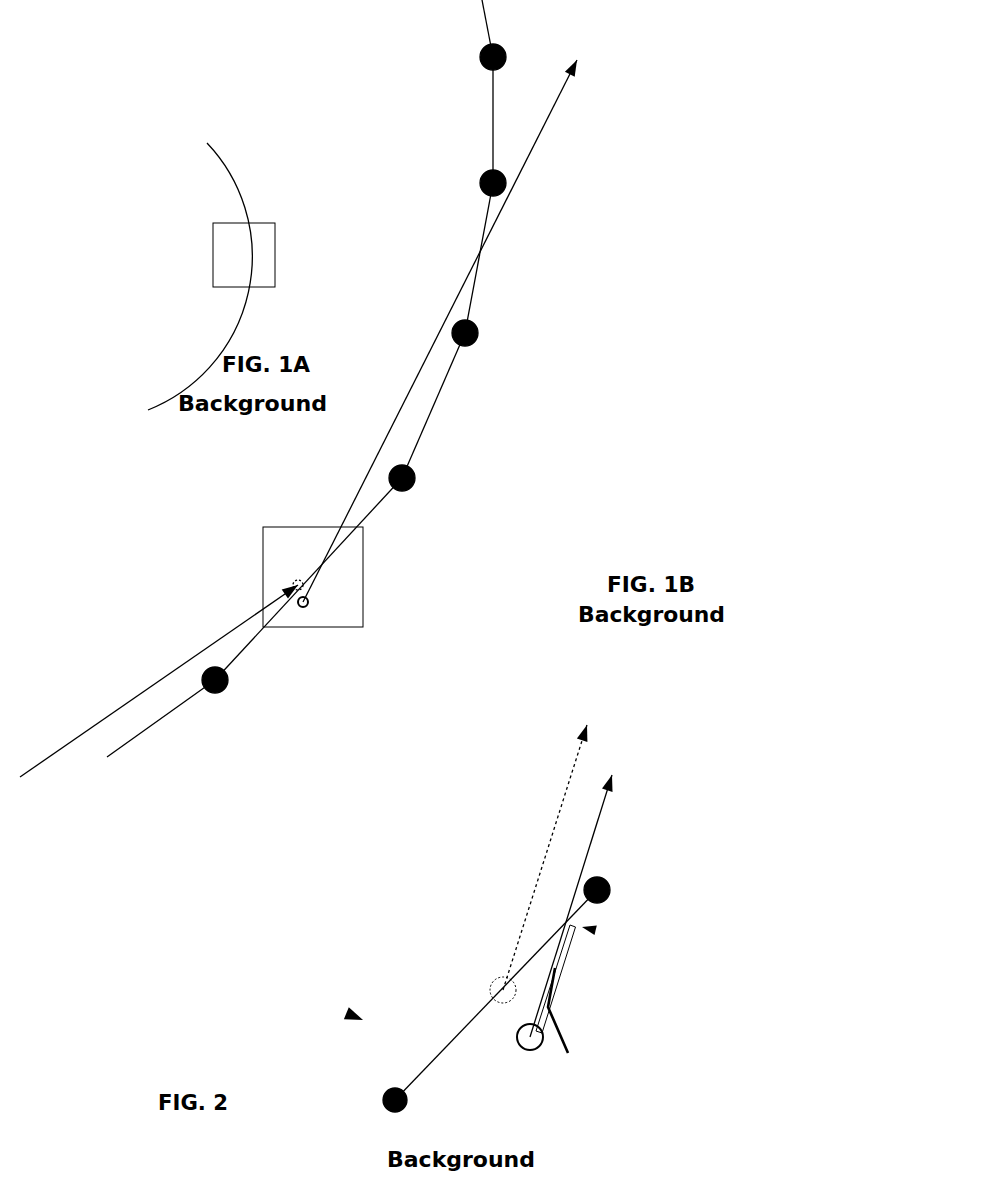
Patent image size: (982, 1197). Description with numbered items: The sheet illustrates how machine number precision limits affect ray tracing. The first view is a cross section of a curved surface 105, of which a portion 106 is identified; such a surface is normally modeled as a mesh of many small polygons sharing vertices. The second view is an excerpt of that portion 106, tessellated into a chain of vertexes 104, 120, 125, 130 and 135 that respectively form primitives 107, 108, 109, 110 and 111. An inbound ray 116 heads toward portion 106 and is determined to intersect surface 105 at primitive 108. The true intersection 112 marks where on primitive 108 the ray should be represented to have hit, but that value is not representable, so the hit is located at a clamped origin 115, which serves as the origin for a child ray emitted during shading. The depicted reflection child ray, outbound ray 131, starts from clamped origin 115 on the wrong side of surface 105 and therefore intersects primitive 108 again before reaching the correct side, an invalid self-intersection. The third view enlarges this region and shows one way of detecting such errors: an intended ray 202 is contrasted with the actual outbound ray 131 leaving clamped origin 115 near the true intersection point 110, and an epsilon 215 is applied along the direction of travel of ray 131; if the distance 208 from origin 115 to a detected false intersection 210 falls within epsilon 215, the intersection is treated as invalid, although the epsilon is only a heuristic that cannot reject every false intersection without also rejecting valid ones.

In FIG. 1B, the vertex 104 is at (215, 690).
In FIG. 2, the vertex 104 is at (387, 1102).
In FIG. 1A, the curved surface 105 is at (213, 347).
In FIG. 1A, the portion of the surface 106 is at (213, 256).
In FIG. 1B, the portion of the surface 106 is at (358, 577).
In FIG. 2, the portion of the surface 106 is at (348, 1014).
In FIG. 1B, the primitive 107 is at (167, 715).
In FIG. 1B, the primitive 108 is at (370, 500).
In FIG. 1B, the primitive 109 is at (445, 375).
In FIG. 1B, the true intersection point 110 is at (477, 275).
In FIG. 2, the true intersection point 110 is at (507, 975).
In FIG. 1B, the primitive 111 is at (493, 125).
In FIG. 1B, the true intersection 112 is at (286, 580).
In FIG. 1B, the clamped origin 115 is at (310, 607).
In FIG. 2, the clamped origin 115 is at (529, 1050).
In FIG. 1B, the inbound ray 116 is at (192, 663).
In FIG. 1B, the vertex 120 is at (415, 477).
In FIG. 2, the vertex 120 is at (610, 893).
In FIG. 1B, the vertex 125 is at (477, 340).
In FIG. 1B, the vertex 130 is at (480, 182).
In FIG. 1B, the outbound ray 131 is at (508, 183).
In FIG. 2, the outbound ray 131 is at (597, 825).
In FIG. 1B, the vertex 135 is at (487, 65).
In FIG. 2, the intended ray 202 is at (545, 867).
In FIG. 2, the distance to intersection 208 is at (560, 980).
In FIG. 2, the false intersection 210 is at (590, 929).
In FIG. 2, the epsilon 215 is at (568, 1053).